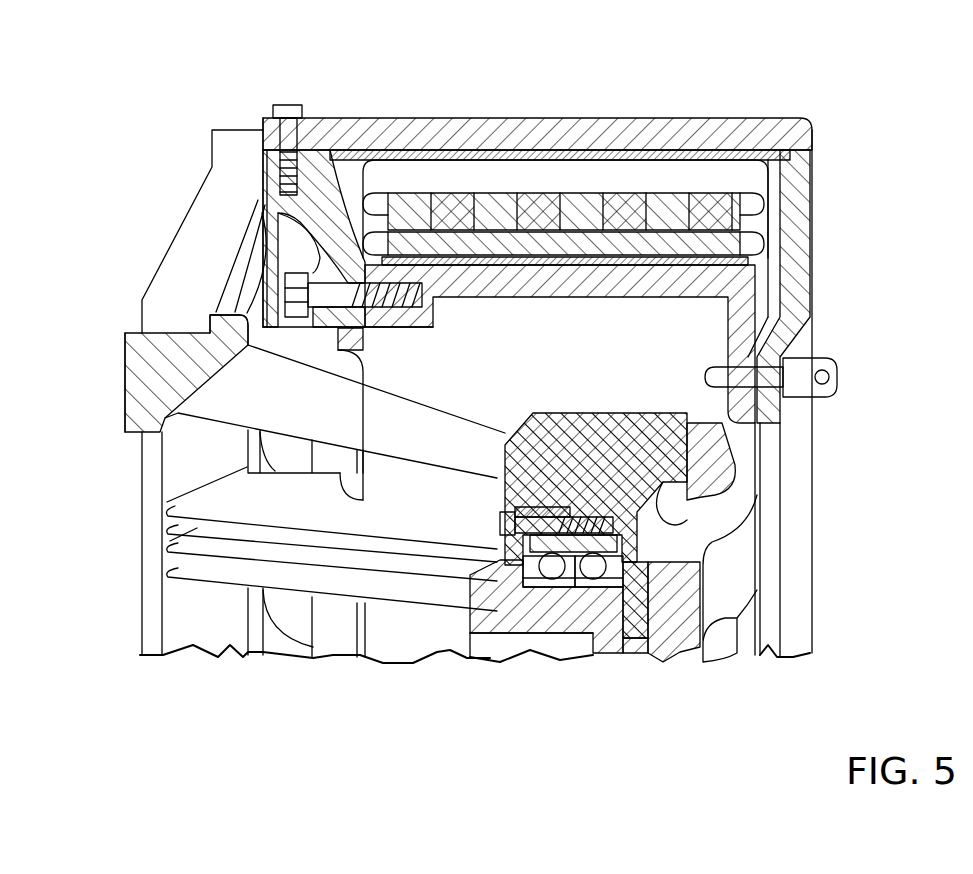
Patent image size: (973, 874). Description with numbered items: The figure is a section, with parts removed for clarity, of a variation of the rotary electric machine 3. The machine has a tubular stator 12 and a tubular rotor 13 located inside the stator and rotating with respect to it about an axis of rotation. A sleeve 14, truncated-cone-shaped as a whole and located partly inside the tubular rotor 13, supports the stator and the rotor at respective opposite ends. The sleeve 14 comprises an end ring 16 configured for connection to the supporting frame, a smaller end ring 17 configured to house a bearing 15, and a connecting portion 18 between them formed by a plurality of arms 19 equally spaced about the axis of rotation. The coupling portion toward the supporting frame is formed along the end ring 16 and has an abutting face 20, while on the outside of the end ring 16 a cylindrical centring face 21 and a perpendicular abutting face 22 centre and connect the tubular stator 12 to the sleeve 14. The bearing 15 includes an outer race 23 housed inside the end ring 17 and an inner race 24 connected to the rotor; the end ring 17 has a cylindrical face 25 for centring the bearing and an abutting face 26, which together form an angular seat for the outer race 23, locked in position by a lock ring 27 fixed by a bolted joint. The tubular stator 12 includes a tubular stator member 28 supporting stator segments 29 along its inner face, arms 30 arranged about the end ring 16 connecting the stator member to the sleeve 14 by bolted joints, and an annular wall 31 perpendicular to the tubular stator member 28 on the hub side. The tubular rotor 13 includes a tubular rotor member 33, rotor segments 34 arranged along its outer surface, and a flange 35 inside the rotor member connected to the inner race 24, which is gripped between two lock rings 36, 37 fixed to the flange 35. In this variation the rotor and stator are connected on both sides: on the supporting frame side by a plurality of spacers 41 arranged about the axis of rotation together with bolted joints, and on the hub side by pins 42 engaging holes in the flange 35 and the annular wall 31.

The rotary electric machine 3 is at (880, 125).
The tubular stator 12 is at (832, 110).
The tubular rotor 13 is at (533, 322).
The sleeve 14 is at (115, 556).
The bearing 15 is at (507, 613).
The end ring 16 is at (147, 393).
The end ring 17 is at (633, 437).
The connecting portion 18 is at (300, 686).
The arms 19 is at (392, 412).
The abutting face 20 is at (115, 387).
The cylindrical centring face 21 is at (152, 325).
The abutting face 22 is at (195, 312).
The outer race 23 is at (500, 540).
The inner race 24 is at (535, 585).
The cylindrical face 25 is at (577, 584).
The abutting face 26 is at (599, 536).
The lock ring 27 is at (530, 508).
The tubular stator member 28 is at (613, 125).
The stator segments 29 is at (703, 150).
The arms 30 is at (205, 237).
The annular wall 31 is at (798, 240).
The tubular rotor member 33 is at (599, 280).
The rotor segments 34 is at (547, 200).
The flange 35 is at (690, 580).
The lock ring 36 is at (640, 627).
The lock ring 37 is at (508, 603).
The spacers 41 is at (303, 198).
The pins 42 is at (719, 376).